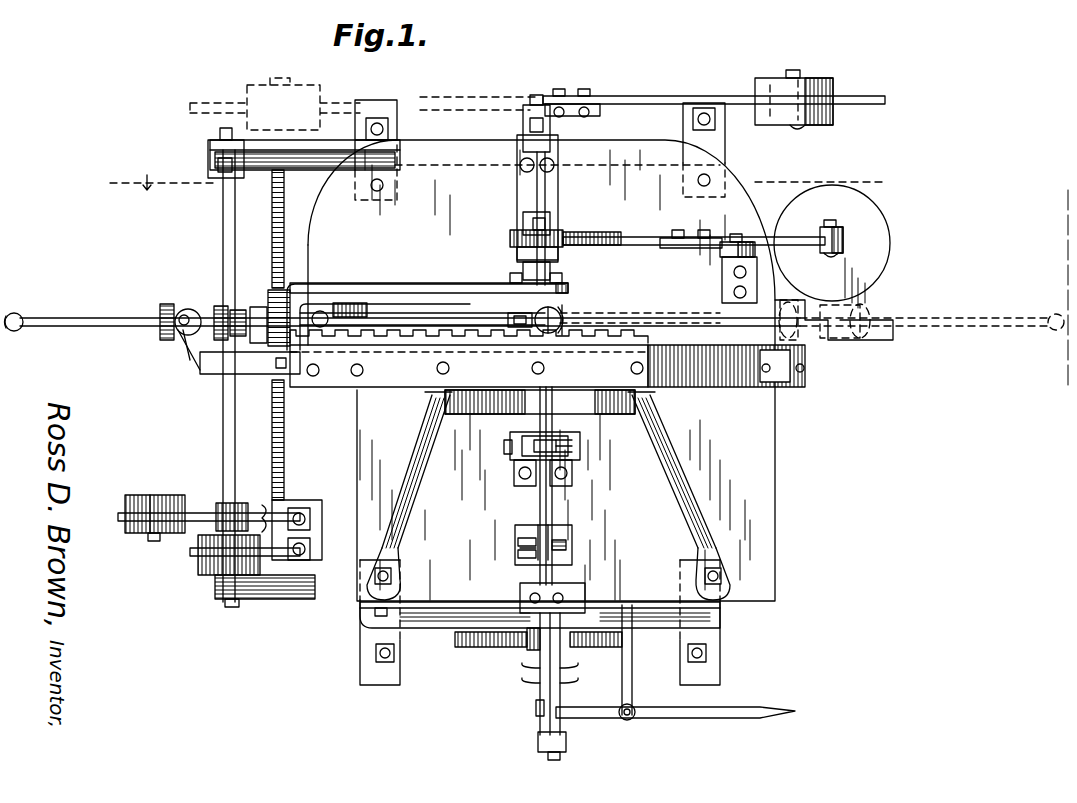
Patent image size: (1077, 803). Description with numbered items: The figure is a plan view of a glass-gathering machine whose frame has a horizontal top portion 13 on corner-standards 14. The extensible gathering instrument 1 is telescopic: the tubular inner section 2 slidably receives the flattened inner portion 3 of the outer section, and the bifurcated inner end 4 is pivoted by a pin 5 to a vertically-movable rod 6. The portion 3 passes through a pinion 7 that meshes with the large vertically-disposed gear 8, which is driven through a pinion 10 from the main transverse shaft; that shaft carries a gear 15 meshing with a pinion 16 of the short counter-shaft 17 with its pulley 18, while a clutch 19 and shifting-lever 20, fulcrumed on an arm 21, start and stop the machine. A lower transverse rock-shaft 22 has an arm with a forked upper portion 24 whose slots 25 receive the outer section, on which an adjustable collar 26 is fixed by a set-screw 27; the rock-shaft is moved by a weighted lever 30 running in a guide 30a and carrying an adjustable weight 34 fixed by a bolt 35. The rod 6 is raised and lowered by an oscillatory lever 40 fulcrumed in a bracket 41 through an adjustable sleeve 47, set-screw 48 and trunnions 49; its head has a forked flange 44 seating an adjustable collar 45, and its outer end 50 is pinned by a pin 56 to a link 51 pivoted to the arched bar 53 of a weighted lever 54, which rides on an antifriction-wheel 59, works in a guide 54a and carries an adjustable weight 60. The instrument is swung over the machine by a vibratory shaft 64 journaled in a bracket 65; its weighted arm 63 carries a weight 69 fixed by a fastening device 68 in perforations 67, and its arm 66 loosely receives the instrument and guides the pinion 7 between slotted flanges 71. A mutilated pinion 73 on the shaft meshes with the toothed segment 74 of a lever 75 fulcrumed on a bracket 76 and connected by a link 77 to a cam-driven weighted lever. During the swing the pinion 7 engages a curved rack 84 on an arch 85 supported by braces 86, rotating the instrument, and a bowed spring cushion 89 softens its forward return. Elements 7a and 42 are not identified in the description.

The extensible gathering instrument 1 is at (70, 322).
The inner section 2 is at (690, 313).
The inner portion of the outer section 3 is at (320, 328).
The inner end of the gathering instrument 4 is at (522, 338).
The pin 5 is at (530, 312).
The vertically-movable rod 6 is at (566, 312).
The pinion 7 is at (282, 290).
The collar 7a is at (255, 307).
The large vertically-disposed gear 8 is at (284, 212).
The pinion 10 is at (339, 357).
The horizontal top portion 13 is at (541, 370).
The corner-standards 14 is at (388, 137).
The gear 15 is at (462, 647).
The pinion 16 is at (585, 647).
The short counter-shaft 17 is at (562, 755).
The pulley 18 is at (522, 670).
The clutch 19 is at (540, 692).
The shifting-lever 20 is at (670, 712).
The arm 21 is at (634, 665).
The lower transverse rock-shaft 22 is at (223, 215).
The forked upper portion 24 is at (190, 309).
The slots or openings 25 is at (165, 328).
The adjustable collar 26 is at (178, 305).
The set-screw 27 is at (183, 335).
The weighted lever 30 is at (198, 513).
The guide 30a is at (266, 508).
The adjustable weight 34 is at (135, 500).
The bolt 35 is at (155, 495).
The oscillatory lever 40 is at (555, 402).
The bracket 41 is at (580, 438).
The rail 42 is at (540, 605).
The forked flange 44 is at (488, 338).
The adjustable collar 45 is at (554, 312).
The adjustable sleeve 47 is at (572, 462).
The set-screw 48 is at (540, 440).
The pivots or trunnions 49 is at (508, 448).
The outer end of the lever 50 is at (568, 530).
The link 51 is at (538, 535).
The arched bar 53 is at (566, 552).
The weighted lever 54 is at (190, 552).
The guide 54a is at (292, 565).
The pin 56 is at (518, 542).
The antifriction-wheel 59 is at (520, 560).
The adjustable weight 60 is at (205, 575).
The weighted arm 63 is at (430, 97).
The vibratory shaft 64 is at (537, 185).
The bracket 65 is at (558, 196).
The arm 66 is at (432, 283).
The perforations 67 is at (175, 340).
The fastening device 68 is at (800, 127).
The weight 69 is at (255, 90).
The laterally-projecting flanges 71 is at (283, 352).
The mutilated pinion 73 is at (510, 236).
The oscillatory toothed segment 74 is at (582, 236).
The lever 75 is at (700, 248).
The bracket 76 is at (728, 242).
The link 77 is at (843, 235).
The curved rack 84 is at (469, 366).
The arch 85 is at (718, 387).
The braces 86 is at (420, 435).
The cushion or buffer 89 is at (370, 284).